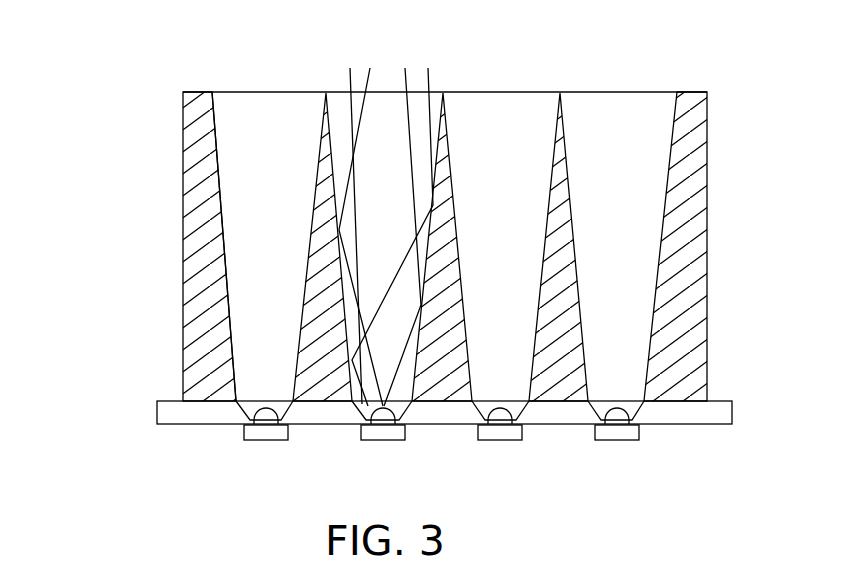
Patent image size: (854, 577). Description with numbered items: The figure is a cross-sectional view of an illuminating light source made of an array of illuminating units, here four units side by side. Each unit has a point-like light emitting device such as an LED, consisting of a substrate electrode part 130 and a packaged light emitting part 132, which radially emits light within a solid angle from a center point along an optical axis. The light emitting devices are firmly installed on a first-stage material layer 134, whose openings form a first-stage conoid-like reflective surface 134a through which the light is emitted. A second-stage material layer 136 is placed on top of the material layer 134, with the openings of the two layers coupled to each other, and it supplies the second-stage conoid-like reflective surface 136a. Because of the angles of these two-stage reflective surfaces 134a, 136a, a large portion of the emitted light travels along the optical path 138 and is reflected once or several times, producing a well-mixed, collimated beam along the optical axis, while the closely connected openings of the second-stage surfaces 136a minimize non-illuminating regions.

The substrate electrode part 130 is at (263, 433).
The packaged light emitting part 132 is at (270, 400).
The material layer 134 is at (160, 413).
The reflective surface 134a is at (236, 410).
The material layer 136 is at (197, 257).
The reflective surface 136a is at (218, 192).
The optical path 138 is at (407, 78).